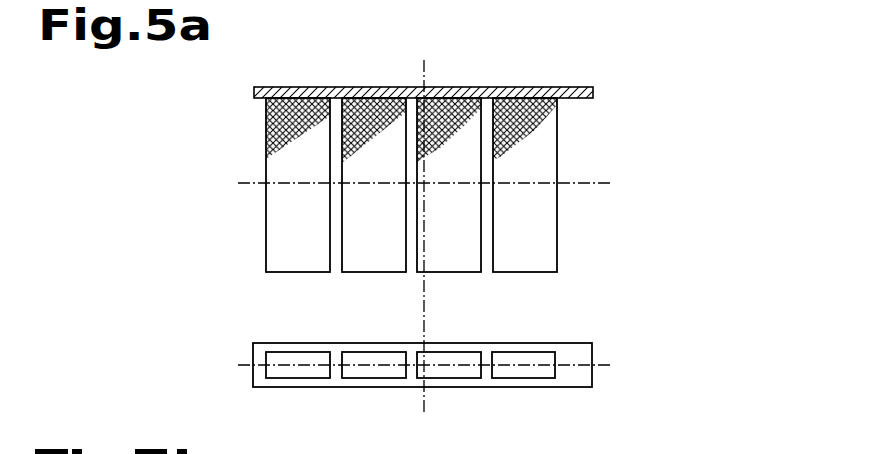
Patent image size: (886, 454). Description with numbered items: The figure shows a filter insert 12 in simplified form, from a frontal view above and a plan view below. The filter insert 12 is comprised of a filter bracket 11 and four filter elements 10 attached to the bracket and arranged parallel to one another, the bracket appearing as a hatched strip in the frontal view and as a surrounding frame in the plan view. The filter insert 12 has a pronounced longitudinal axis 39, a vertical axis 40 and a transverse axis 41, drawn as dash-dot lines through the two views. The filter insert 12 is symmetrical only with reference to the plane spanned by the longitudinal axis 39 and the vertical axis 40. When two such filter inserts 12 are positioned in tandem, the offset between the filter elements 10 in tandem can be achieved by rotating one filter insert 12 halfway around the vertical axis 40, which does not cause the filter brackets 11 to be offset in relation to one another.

The filter element 10 is at (289, 236).
The filter bracket 11 is at (340, 87).
The filter insert 12 is at (602, 71).
The longitudinal axis 39 is at (593, 183).
The vertical axis 40 is at (425, 79).
The transverse axis 41 is at (425, 332).